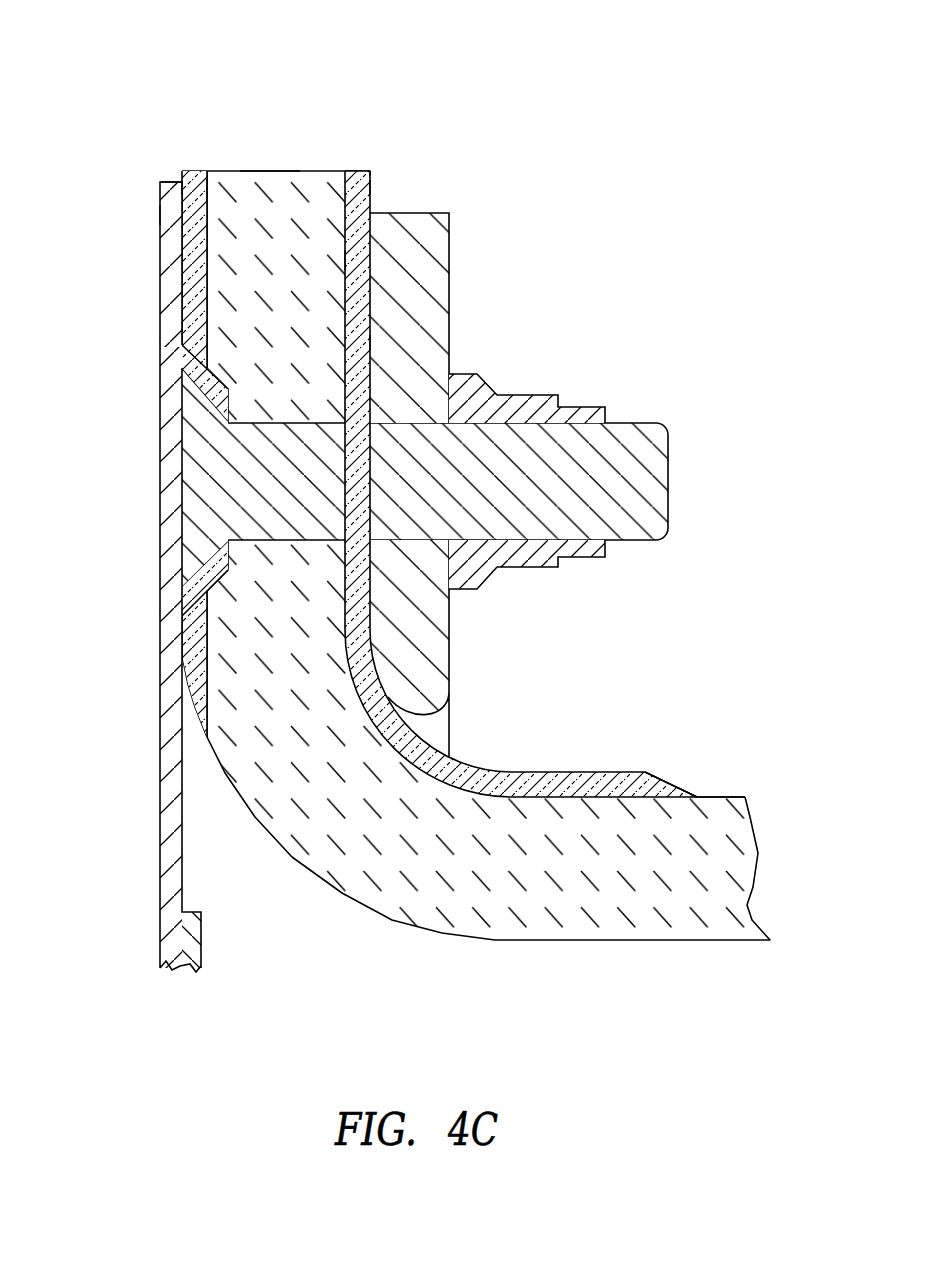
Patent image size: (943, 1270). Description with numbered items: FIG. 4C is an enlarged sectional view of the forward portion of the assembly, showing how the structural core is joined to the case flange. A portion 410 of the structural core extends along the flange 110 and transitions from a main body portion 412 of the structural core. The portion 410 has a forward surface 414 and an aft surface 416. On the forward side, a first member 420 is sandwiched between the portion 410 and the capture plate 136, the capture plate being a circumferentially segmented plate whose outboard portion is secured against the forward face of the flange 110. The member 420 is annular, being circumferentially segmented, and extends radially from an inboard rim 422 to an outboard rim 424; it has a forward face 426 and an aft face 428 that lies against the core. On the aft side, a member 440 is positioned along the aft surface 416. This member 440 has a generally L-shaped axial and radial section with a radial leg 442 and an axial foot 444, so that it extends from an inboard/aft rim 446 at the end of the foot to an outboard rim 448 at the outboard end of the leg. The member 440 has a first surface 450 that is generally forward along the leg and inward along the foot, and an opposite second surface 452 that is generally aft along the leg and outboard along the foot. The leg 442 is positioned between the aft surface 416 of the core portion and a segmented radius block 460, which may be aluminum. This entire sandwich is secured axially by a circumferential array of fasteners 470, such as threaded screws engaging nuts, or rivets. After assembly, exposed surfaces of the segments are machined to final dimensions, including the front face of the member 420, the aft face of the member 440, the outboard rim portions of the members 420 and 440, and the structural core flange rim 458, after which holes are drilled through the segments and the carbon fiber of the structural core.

The flange 110 is at (419, 509).
The capture plate 136 is at (124, 548).
The portion of the structural core 410 is at (312, 186).
The main body portion of the structural core 412 is at (685, 905).
The forward surface 414 is at (202, 258).
The aft surface 416 is at (346, 258).
The first member 420 is at (192, 217).
The inboard rim 422 is at (193, 750).
The outboard rim 424 is at (151, 241).
The forward face 426 is at (185, 200).
The aft face 428 is at (207, 192).
The member 440 is at (370, 186).
The radial leg 442 is at (355, 342).
The axial foot 444 is at (572, 780).
The inboard/aft rim 446 is at (698, 773).
The outboard rim 448 is at (366, 161).
The first surface 450 is at (545, 438).
The second surface 452 is at (372, 200).
The structural core flange rim 458 is at (260, 170).
The segmented radius block 460 is at (487, 473).
The fasteners 470 is at (694, 451).